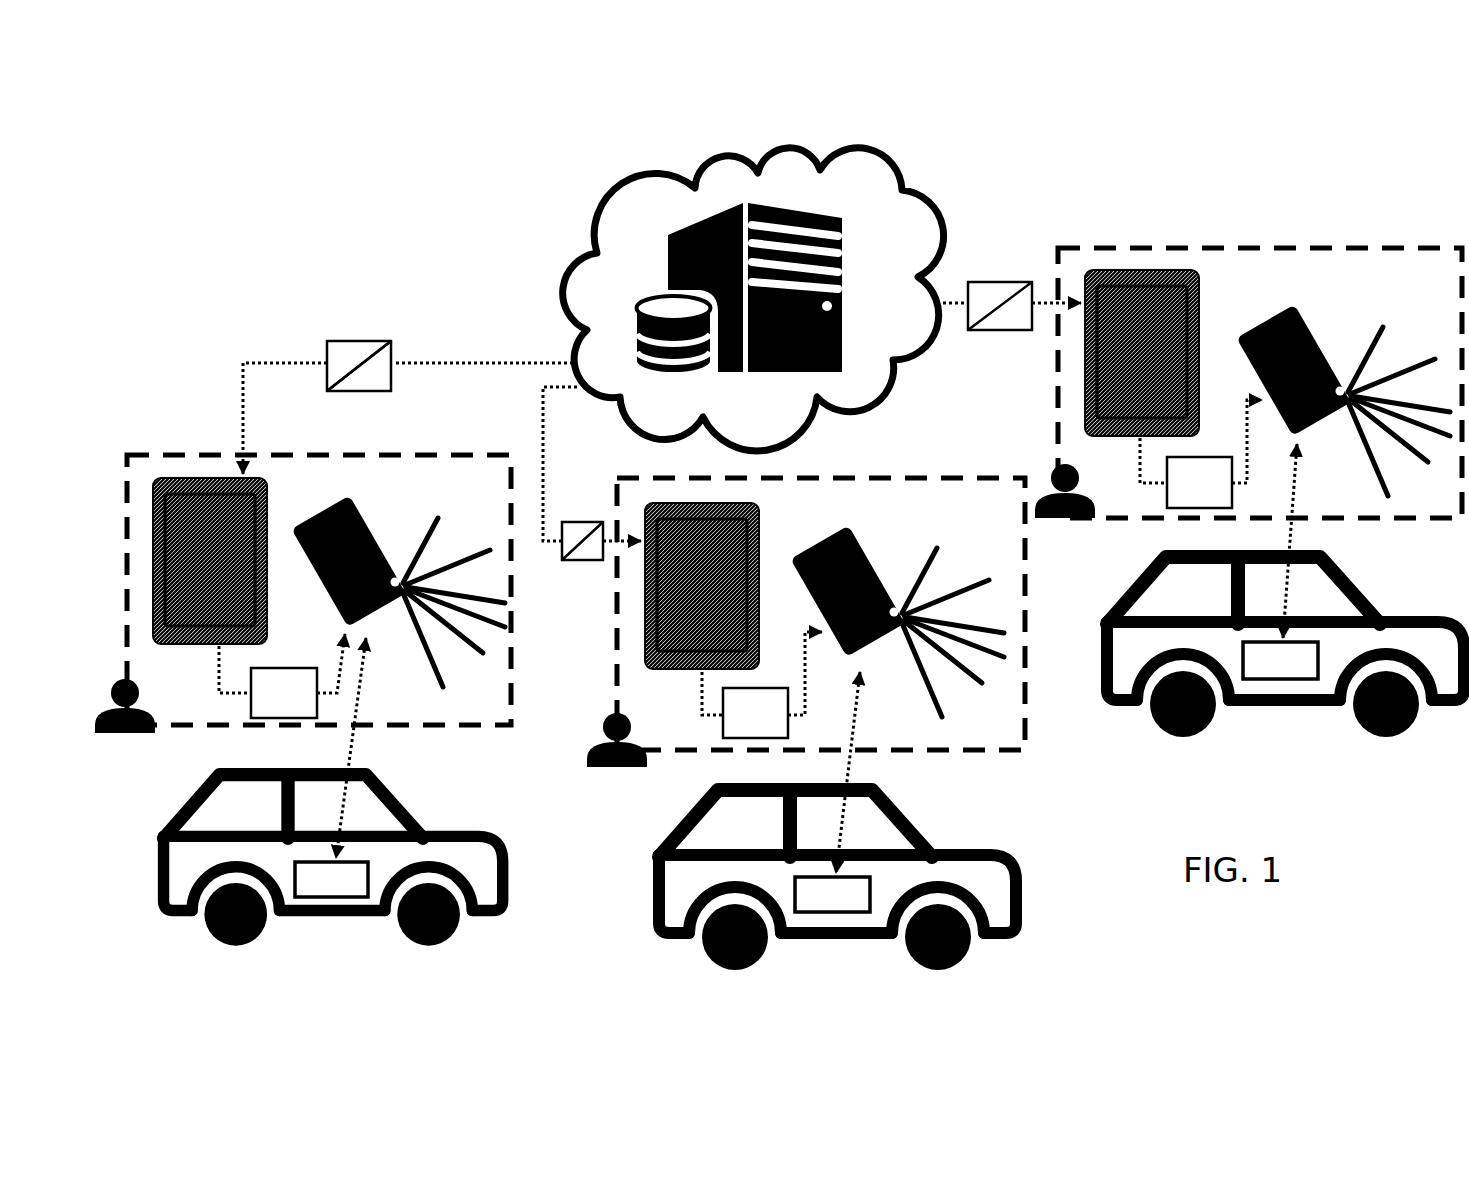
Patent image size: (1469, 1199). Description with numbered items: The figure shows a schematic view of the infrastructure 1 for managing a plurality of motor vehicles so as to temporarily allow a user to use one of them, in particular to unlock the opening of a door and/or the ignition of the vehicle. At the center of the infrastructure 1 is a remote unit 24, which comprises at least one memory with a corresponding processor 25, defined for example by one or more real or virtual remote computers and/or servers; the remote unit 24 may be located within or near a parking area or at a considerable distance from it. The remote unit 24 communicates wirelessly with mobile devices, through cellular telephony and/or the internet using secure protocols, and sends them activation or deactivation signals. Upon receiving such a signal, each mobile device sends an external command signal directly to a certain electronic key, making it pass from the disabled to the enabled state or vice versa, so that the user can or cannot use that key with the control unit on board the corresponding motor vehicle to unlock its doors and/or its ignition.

The infrastructure 1 is at (452, 314).
The remote unit 24 is at (593, 233).
The processor 25 is at (845, 246).